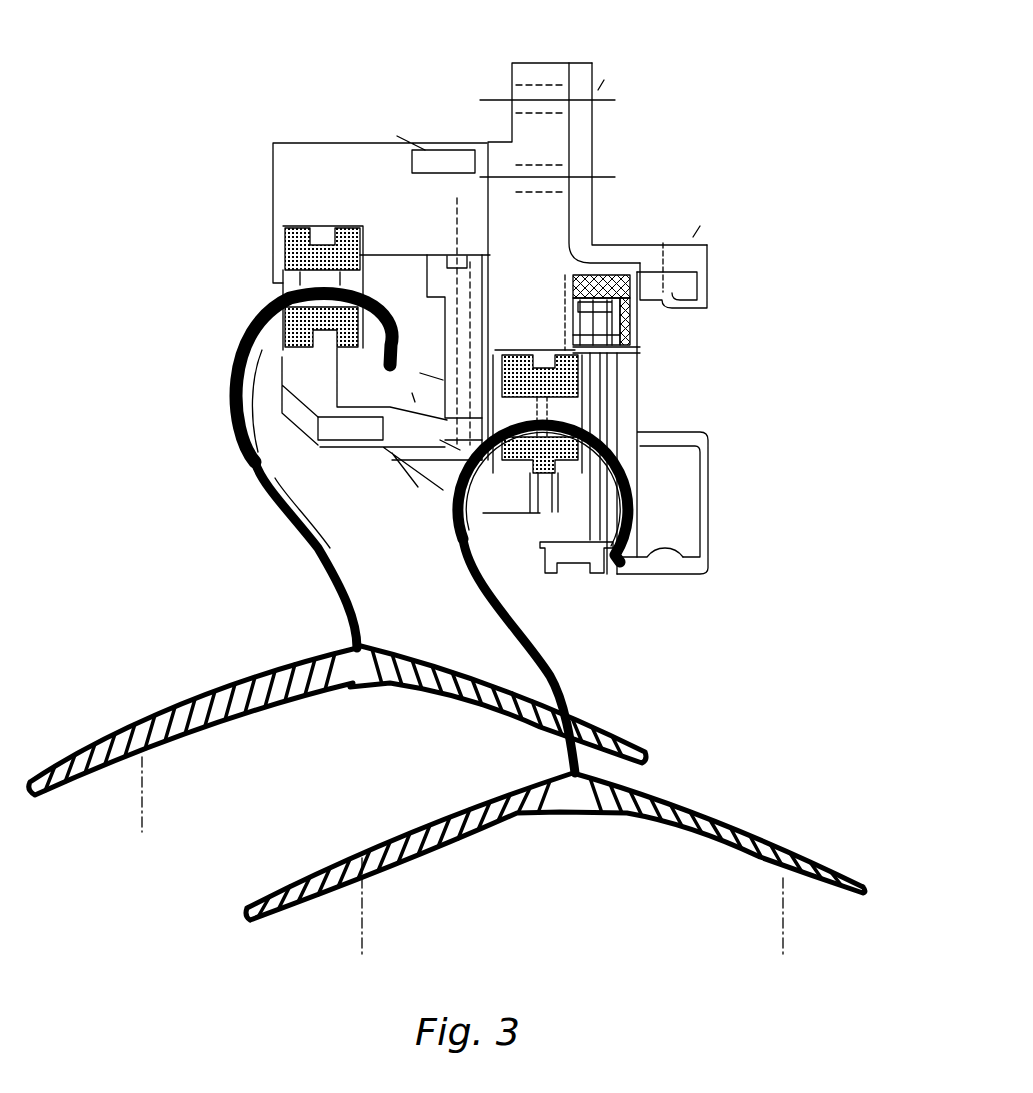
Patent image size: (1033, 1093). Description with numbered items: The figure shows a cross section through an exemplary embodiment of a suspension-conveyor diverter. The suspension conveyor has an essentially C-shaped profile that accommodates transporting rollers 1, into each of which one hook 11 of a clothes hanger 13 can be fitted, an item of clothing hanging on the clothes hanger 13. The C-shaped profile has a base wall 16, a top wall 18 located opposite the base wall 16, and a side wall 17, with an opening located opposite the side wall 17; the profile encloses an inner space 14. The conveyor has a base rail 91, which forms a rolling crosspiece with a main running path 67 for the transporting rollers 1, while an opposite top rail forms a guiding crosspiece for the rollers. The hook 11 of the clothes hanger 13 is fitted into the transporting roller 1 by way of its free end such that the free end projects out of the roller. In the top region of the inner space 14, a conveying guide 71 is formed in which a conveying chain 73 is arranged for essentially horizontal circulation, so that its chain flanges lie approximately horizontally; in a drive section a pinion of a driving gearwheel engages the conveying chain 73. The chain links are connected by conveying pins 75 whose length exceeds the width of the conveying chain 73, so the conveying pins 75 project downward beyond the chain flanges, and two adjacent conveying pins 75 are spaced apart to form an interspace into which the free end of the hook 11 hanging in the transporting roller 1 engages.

The transporting roller 1 is at (283, 271).
The hook 11 is at (297, 483).
The clothes hanger 13 is at (133, 720).
The inner space 14 is at (680, 490).
The base wall 16 is at (688, 562).
The side wall 17 is at (712, 494).
The top wall 18 is at (613, 277).
The main running path 67 is at (540, 483).
The conveying guide 71 is at (627, 277).
The conveying chain 73 is at (635, 353).
The conveying pins 75 is at (597, 407).
The base rail 91 is at (548, 495).